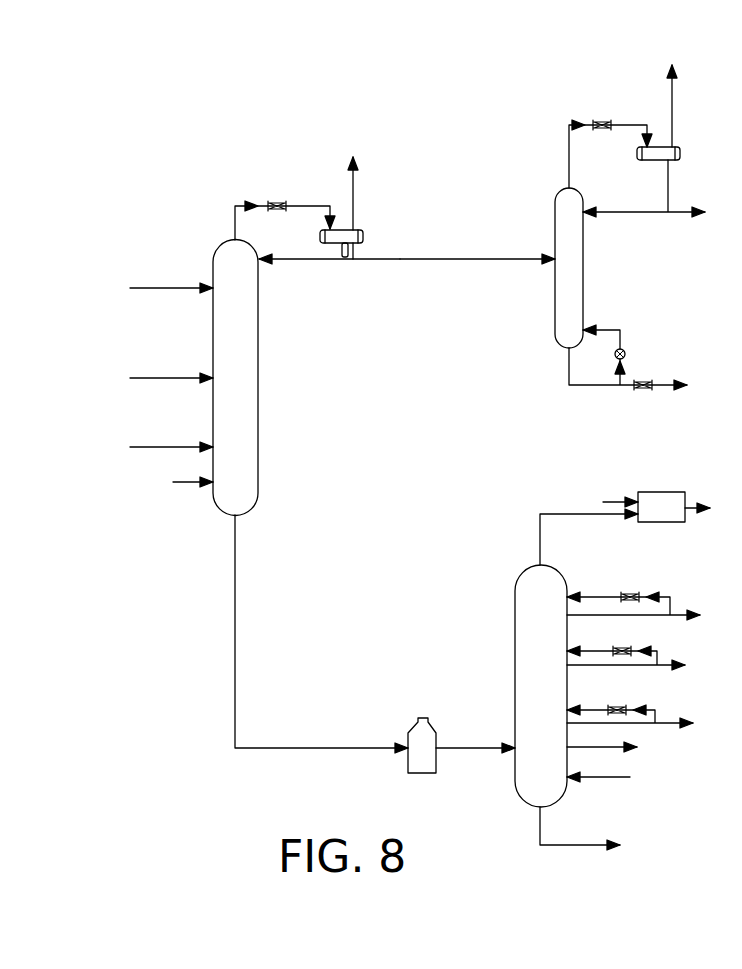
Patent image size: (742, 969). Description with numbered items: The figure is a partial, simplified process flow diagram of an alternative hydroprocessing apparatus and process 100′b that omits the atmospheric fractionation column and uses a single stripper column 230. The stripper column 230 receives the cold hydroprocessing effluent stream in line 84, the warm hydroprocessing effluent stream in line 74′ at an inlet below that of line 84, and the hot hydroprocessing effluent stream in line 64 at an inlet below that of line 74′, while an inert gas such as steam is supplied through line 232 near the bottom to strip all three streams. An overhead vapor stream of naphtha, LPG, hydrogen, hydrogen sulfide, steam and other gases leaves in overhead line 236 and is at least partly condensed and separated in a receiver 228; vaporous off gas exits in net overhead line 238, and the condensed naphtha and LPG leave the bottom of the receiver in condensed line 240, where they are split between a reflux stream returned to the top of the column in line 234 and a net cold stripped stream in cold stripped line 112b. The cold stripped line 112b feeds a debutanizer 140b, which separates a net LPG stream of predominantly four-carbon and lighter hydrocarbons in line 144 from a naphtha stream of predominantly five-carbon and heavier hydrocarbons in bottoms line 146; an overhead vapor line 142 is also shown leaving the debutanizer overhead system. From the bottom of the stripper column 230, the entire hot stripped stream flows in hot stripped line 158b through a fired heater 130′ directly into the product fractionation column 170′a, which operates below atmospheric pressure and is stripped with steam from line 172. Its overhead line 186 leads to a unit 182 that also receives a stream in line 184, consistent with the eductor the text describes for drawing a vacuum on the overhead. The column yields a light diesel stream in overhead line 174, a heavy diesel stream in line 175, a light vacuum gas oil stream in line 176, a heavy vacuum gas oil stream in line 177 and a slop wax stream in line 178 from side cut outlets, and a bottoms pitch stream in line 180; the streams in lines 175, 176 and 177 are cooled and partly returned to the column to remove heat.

The process system 100′b is at (288, 78).
The single stripper column 230 is at (213, 262).
The overhead line 236 is at (235, 212).
The receiver 228 is at (362, 229).
The net overhead line 238 is at (350, 188).
The condensed line 240 is at (354, 256).
The reflux line 234 is at (323, 262).
The cold stripped line 112b is at (381, 261).
The cold hydroprocessing effluent line 84 is at (150, 290).
The warm hydroprocessing effluent line 74′ is at (168, 377).
The hot hydroprocessing effluent line 64 is at (168, 446).
The stripping gas line 232 is at (185, 482).
The hot stripped line 158b is at (320, 748).
The fired heater 130′ is at (422, 773).
The product fractionation column 170′a is at (515, 685).
The overhead line 186 is at (540, 537).
The inlet line 184 is at (606, 500).
The overhead unit 182 is at (650, 522).
The overhead line 174 is at (688, 513).
The heavy diesel line 175 is at (686, 613).
The light vacuum gas oil line 176 is at (658, 663).
The heavy vacuum gas oil line 177 is at (672, 721).
The slop wax line 178 is at (600, 748).
The stripping steam line 172 is at (612, 777).
The bottoms line 180 is at (540, 835).
The debutanizer column 140b is at (583, 268).
The overhead vent line 142 is at (670, 100).
The net LPG line 144 is at (682, 213).
The bottoms line 146 is at (665, 383).